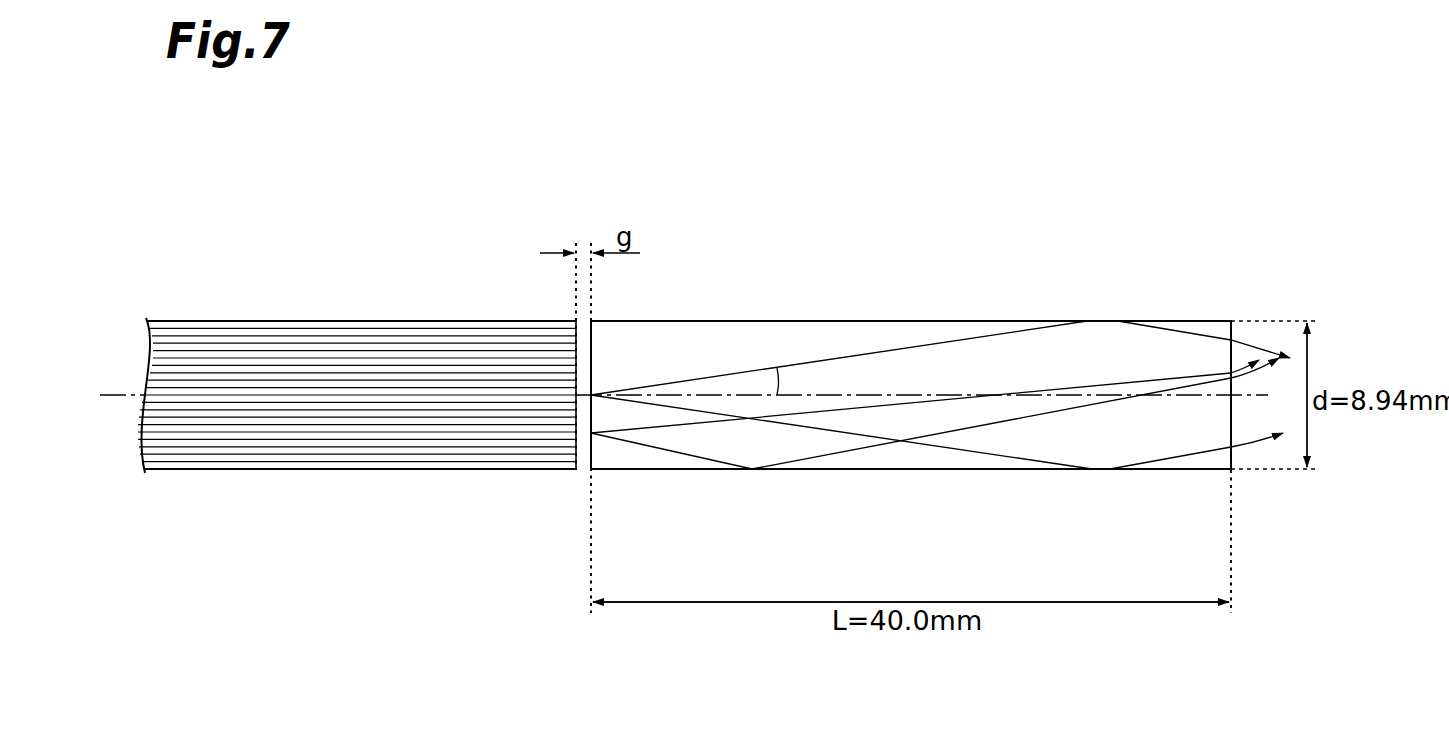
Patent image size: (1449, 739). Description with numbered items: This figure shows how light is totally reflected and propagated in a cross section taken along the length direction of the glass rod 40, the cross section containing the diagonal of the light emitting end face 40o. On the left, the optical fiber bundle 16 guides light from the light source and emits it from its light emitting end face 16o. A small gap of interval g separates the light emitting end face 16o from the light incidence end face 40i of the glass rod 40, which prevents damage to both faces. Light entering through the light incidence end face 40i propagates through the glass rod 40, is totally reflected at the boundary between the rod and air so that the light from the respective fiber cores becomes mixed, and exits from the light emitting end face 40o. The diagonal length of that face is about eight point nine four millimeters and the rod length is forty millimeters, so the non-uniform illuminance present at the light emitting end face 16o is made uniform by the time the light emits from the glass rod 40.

The optical fiber bundle 16 is at (294, 345).
The light emitting end face 16o is at (576, 345).
The glass rod 40 is at (835, 336).
The light incidence end face 40i is at (591, 346).
The light emitting end face 40o is at (1231, 341).